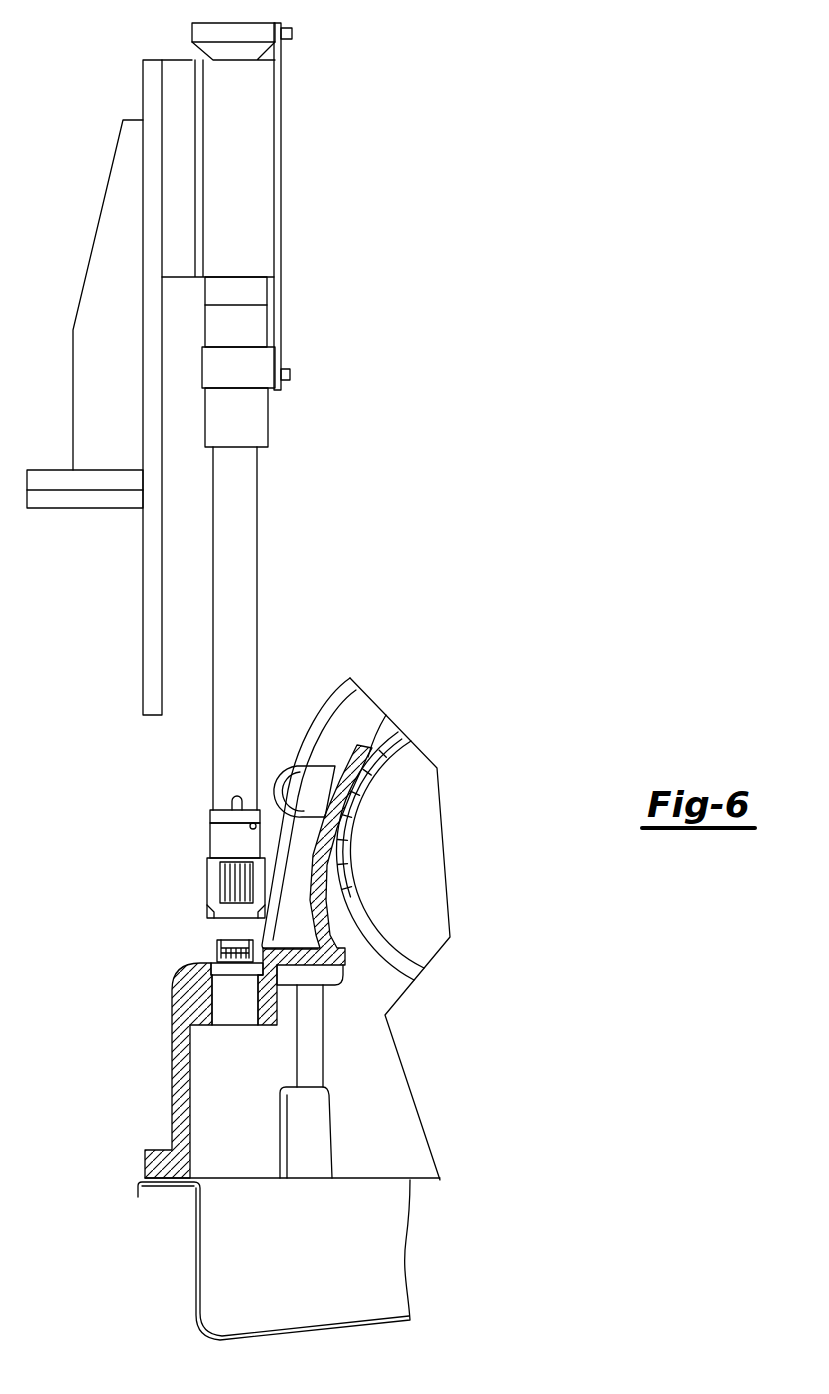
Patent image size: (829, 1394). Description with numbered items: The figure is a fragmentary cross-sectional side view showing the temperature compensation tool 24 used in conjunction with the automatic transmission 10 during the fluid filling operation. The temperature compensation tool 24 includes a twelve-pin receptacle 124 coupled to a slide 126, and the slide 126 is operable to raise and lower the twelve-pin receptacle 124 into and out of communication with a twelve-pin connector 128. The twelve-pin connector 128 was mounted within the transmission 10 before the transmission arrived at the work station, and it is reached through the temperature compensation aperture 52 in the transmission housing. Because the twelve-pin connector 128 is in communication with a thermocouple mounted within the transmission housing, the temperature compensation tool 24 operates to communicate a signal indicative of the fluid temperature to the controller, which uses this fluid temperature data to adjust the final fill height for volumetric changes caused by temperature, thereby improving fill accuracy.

The automatic transmission 10 is at (392, 700).
The temperature compensation tool 24 is at (297, 549).
The temperature compensation aperture 52 is at (215, 1003).
The 12-pin receptacle 124 is at (210, 890).
The slide 126 is at (147, 637).
The 12-pin connector 128 is at (204, 950).